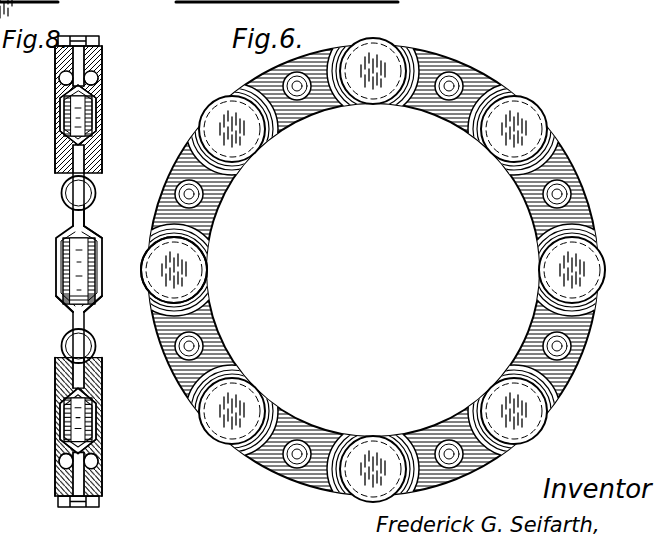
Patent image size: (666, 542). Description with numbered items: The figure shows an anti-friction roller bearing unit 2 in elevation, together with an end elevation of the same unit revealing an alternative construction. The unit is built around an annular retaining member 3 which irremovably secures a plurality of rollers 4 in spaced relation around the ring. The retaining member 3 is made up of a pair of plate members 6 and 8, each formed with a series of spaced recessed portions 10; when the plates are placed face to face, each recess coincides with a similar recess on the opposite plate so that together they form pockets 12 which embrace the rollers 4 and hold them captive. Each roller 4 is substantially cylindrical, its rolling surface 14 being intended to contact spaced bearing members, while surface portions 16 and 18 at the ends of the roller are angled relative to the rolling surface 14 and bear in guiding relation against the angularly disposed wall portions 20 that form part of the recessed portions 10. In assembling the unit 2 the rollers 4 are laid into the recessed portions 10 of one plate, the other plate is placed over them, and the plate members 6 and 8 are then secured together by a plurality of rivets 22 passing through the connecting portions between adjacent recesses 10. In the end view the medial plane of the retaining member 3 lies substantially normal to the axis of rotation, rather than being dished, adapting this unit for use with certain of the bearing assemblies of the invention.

In FIG. 6, the roller bearing unit 2 is at (477, 64).
In FIG. 8, the retaining member 3 is at (62, 169).
In FIG. 6, the retaining member 3 is at (505, 88).
In FIG. 6, the rollers 4 is at (540, 107).
In FIG. 8, the plate member 6 is at (72, 212).
In FIG. 8, the plate member 8 is at (85, 213).
In FIG. 8, the recessed portions 10 is at (111, 294).
In FIG. 6, the recessed portions 10 is at (192, 265).
In FIG. 8, the pockets 12 is at (72, 310).
In FIG. 8, the rolling surface 14 is at (60, 240).
In FIG. 8, the surface portion 16 is at (62, 265).
In FIG. 8, the surface portion 18 is at (89, 264).
In FIG. 8, the wall portions 20 is at (98, 235).
In FIG. 8, the rivets 22 is at (97, 190).
In FIG. 6, the rivets 22 is at (202, 196).